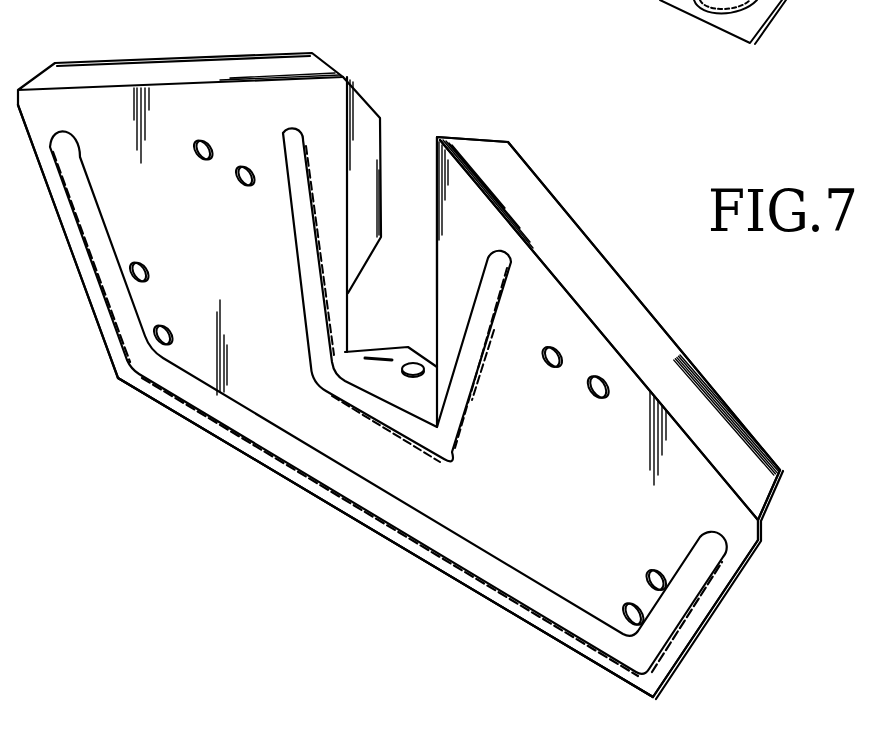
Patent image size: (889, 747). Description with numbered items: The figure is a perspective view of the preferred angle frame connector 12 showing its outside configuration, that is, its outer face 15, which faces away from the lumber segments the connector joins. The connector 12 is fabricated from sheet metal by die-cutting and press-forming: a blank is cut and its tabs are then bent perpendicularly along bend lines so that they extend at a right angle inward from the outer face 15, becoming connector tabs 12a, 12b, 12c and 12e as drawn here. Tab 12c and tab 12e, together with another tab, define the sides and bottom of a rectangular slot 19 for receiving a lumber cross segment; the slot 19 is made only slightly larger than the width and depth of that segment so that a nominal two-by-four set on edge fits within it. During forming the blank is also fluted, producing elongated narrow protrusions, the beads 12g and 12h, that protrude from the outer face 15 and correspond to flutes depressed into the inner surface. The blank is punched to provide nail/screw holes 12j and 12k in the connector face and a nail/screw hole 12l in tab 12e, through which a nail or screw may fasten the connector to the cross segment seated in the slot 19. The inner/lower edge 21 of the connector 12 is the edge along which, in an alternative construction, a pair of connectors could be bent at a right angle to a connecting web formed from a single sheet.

The angle frame connector 12 is at (597, 198).
The connector tab 12a is at (200, 63).
The connector tab 12b is at (624, 280).
The connector tab 12c is at (368, 107).
The connector tab 12e is at (388, 350).
The bead 12g is at (298, 262).
The bead 12h is at (104, 216).
The nail/screw holes 12j is at (234, 180).
The nail/screw holes 12k is at (588, 388).
The nail/screw hole 12l is at (414, 375).
The outer face 15 is at (577, 481).
The rectangular slot 19 is at (422, 138).
The inner/lower edge 21 is at (366, 527).